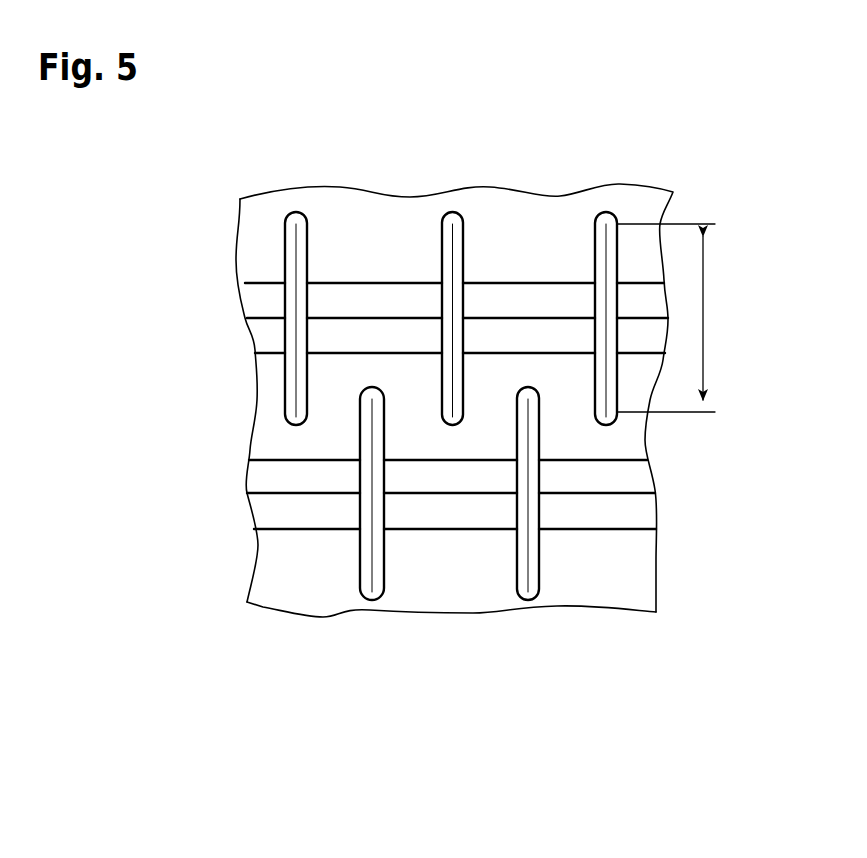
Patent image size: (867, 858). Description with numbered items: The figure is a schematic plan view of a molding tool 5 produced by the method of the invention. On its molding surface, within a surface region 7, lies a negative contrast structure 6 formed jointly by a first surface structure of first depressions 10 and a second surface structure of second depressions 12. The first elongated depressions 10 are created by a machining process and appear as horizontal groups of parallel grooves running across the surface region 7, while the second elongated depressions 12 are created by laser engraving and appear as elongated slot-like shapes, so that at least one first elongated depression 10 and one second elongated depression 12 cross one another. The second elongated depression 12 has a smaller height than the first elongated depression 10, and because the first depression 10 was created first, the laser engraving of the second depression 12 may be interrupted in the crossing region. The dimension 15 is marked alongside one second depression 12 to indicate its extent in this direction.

The molding tool 5 is at (495, 443).
The negative contrast structure 6 is at (594, 618).
The surface region 7 is at (636, 442).
The first elongated depression 10 is at (272, 338).
The second elongated depression 12 is at (291, 228).
The slot length 15 is at (703, 317).